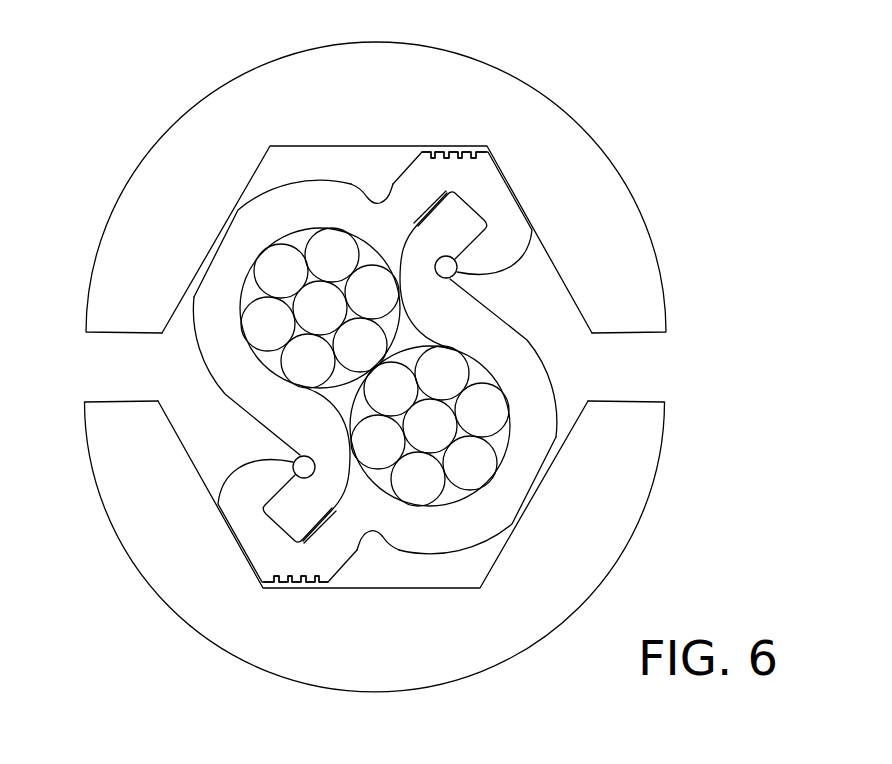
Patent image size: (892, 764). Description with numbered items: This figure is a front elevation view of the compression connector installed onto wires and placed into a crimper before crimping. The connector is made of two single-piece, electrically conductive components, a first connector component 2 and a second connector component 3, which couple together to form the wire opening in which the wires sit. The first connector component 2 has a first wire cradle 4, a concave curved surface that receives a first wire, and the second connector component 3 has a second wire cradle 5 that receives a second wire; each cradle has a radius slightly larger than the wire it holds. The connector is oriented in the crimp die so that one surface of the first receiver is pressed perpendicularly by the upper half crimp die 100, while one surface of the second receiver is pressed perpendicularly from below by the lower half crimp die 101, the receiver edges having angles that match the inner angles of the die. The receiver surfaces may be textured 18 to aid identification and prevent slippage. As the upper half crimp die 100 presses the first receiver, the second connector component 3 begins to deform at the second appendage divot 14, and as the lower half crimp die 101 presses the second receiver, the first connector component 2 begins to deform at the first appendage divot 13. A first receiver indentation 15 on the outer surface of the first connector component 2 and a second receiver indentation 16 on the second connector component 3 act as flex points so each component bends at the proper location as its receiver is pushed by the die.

The first connector component 2 is at (263, 200).
The second connector component 3 is at (483, 533).
The first wire cradle 4 is at (240, 282).
The second wire cradle 5 is at (507, 453).
The first appendage divot 13 is at (456, 266).
The second appendage divot 14 is at (268, 450).
The first receiver indentation 15 is at (378, 201).
The second receiver indentation 16 is at (372, 533).
The textured surface 18 is at (448, 152).
The upper half crimp die 100 is at (593, 153).
The lower half crimp die 101 is at (623, 530).